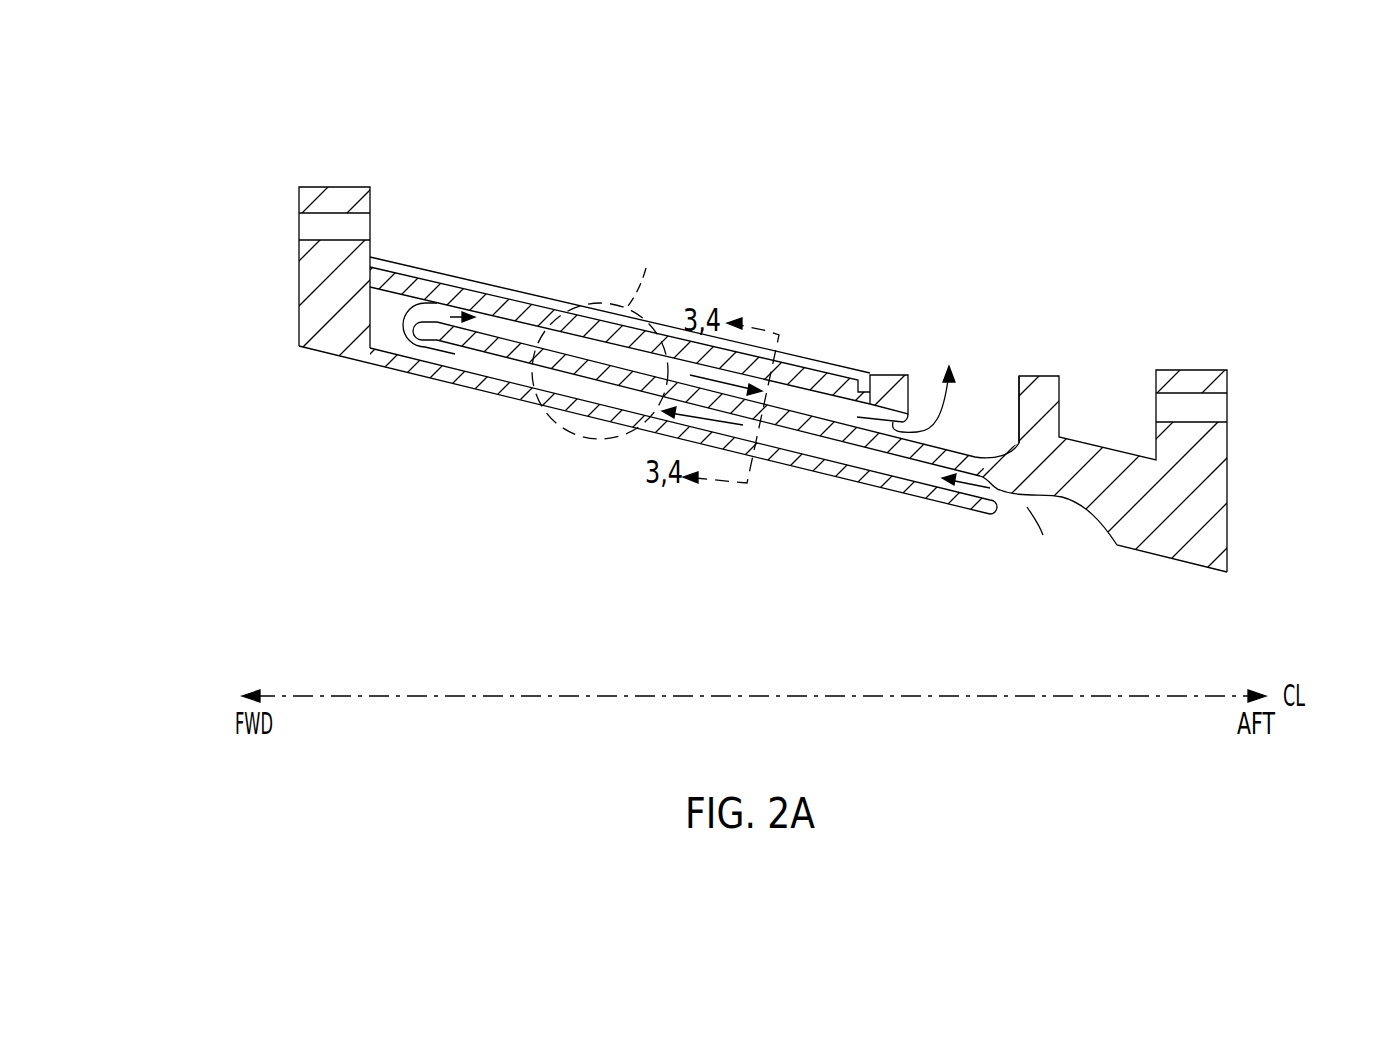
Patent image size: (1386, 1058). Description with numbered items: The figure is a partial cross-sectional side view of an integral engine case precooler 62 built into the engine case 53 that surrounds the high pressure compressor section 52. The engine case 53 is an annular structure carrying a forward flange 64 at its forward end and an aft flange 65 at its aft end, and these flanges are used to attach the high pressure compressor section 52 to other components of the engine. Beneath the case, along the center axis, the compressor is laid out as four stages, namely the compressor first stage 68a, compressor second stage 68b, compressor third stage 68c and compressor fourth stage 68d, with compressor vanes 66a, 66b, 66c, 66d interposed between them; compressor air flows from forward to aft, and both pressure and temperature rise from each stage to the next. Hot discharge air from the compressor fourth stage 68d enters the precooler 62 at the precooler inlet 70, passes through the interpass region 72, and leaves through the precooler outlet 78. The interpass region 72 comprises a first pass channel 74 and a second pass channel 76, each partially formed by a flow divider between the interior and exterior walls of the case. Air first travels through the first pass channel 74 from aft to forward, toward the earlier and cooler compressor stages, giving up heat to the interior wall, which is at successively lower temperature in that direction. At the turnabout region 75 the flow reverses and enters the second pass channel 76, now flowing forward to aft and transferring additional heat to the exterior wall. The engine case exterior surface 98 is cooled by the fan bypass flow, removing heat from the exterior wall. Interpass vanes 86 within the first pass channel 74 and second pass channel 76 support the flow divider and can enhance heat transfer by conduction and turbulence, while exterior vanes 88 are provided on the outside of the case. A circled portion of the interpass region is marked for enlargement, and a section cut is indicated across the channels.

The high pressure compressor section 52 is at (252, 115).
The engine case 53 is at (413, 373).
The precooler 62 is at (542, 264).
The forward flange 64 is at (299, 270).
The aft flange 65 is at (1227, 458).
The compressor vane 66a is at (322, 683).
The compressor vane 66b is at (532, 683).
The compressor vane 66c is at (740, 683).
The compressor vane 66d is at (953, 683).
The compressor first stage 68a is at (425, 683).
The compressor second stage 68b is at (634, 683).
The compressor third stage 68c is at (843, 683).
The compressor fourth stage 68d is at (1053, 683).
The precooler inlet 70 is at (1088, 540).
The interpass region 72 is at (827, 437).
The first pass channel 74 is at (488, 367).
The turnabout region 75 is at (380, 300).
The second pass channel 76 is at (495, 328).
The precooler outlet 78 is at (977, 383).
The interpass vanes 86 is at (465, 362).
The exterior vanes 88 is at (415, 268).
The engine case exterior surface 98 is at (445, 288).